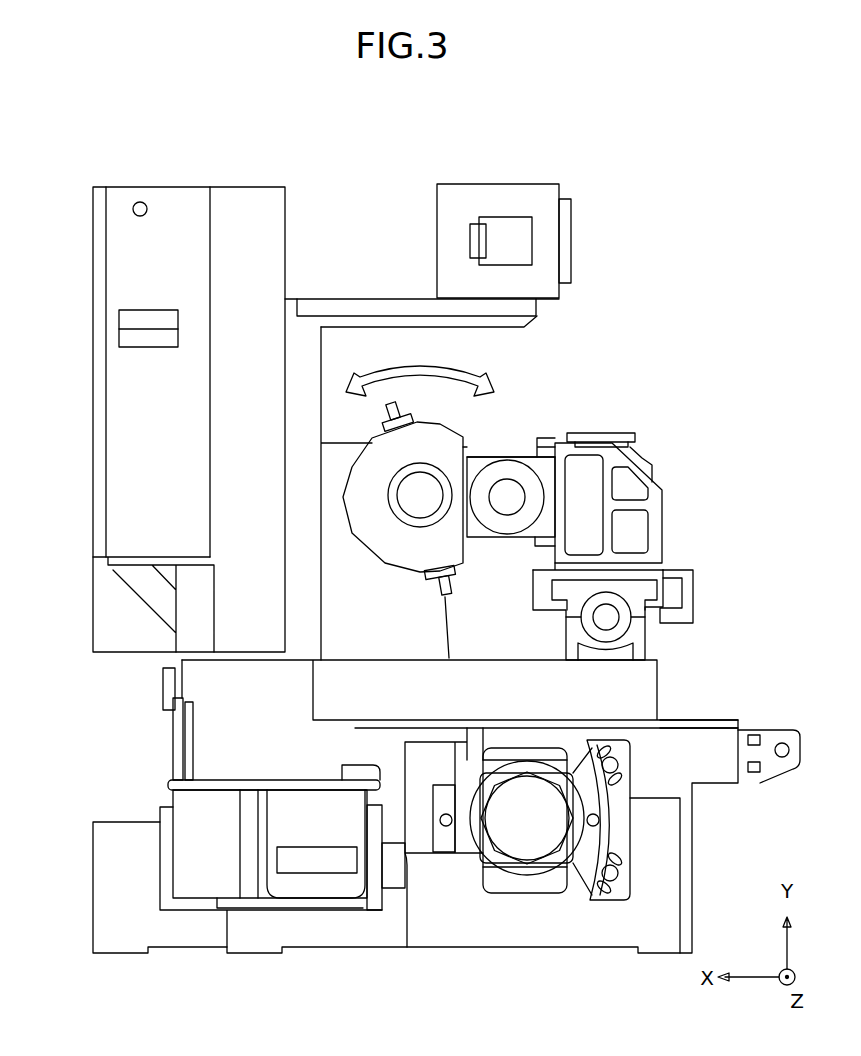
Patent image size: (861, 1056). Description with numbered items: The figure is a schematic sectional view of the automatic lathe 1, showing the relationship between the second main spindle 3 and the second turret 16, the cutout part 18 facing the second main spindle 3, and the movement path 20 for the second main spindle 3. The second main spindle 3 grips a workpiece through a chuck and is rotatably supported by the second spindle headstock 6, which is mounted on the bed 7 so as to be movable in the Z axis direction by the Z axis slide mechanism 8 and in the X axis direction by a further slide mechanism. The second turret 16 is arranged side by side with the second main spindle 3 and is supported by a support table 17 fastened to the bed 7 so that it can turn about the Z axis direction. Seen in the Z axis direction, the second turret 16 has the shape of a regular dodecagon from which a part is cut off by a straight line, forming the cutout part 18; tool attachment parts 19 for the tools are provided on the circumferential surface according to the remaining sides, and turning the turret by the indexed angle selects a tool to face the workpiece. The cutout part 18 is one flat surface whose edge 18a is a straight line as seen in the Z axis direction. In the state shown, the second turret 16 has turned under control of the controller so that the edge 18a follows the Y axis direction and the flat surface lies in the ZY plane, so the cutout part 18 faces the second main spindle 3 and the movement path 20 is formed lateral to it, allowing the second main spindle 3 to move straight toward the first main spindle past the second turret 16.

The automatic lathe 1 is at (558, 173).
The second main spindle 3 is at (517, 454).
The second spindle headstock 6 is at (557, 437).
The bed 7 is at (653, 717).
The Z axis slide mechanism 8 is at (668, 578).
The second turret 16 is at (448, 432).
The support table 17 is at (348, 613).
The cutout part 18 is at (472, 456).
The edge 18a is at (465, 447).
The tool attachment parts 19 is at (394, 370).
The movement path 20 is at (474, 545).